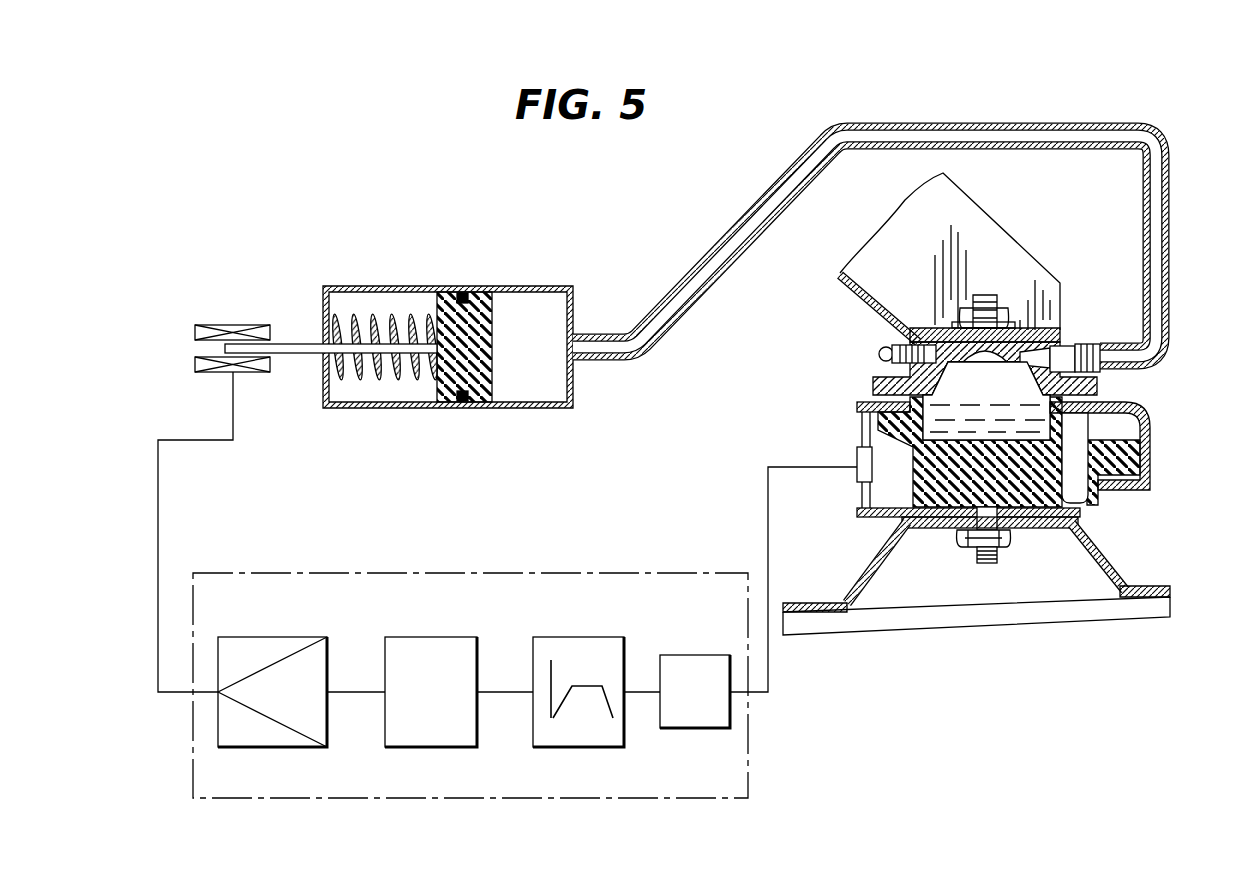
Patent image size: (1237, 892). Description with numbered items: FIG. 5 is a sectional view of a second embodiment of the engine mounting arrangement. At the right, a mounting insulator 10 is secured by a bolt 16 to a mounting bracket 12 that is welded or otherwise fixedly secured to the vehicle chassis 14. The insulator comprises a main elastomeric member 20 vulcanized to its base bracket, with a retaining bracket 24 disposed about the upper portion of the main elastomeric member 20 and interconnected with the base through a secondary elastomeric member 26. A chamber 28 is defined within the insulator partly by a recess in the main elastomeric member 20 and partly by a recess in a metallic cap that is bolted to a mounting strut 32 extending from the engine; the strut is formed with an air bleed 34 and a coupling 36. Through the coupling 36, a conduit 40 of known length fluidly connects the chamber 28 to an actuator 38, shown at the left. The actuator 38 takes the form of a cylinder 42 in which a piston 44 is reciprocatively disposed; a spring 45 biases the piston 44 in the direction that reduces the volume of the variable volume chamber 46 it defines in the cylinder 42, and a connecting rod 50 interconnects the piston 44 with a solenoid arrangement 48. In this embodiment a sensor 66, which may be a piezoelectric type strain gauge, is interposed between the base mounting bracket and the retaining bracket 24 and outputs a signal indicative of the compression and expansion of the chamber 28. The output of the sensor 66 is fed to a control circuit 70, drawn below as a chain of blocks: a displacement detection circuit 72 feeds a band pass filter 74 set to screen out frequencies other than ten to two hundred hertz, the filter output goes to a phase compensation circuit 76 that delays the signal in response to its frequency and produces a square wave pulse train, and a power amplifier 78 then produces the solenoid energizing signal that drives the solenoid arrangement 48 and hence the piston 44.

The mounting insulator 10 is at (983, 432).
The mounting bracket 12 is at (1085, 547).
The vehicle chassis 14 is at (1105, 615).
The bolt 16 is at (977, 556).
The main elastomeric member 20 is at (920, 485).
The retaining bracket 24 is at (860, 403).
The secondary elastomeric member 26 is at (1115, 483).
The chamber 28 is at (1002, 390).
The mounting strut 32 is at (877, 297).
The air bleed 34 is at (880, 355).
The coupling 36 is at (1065, 345).
The actuator 38 is at (399, 314).
The conduit 40 is at (747, 247).
The cylinder 42 is at (323, 300).
The piston 44 is at (447, 300).
The spring 45 is at (335, 382).
The variable volume chamber 46 is at (542, 355).
The solenoid arrangement 48 is at (215, 322).
The connecting rod 50 is at (293, 343).
The sensor 66 is at (856, 455).
The control circuit 70 is at (470, 659).
The displacement detection circuit 72 is at (708, 655).
The band pass filter 74 is at (602, 637).
The phase compensation circuit 76 is at (452, 637).
The power amplifier 78 is at (302, 637).